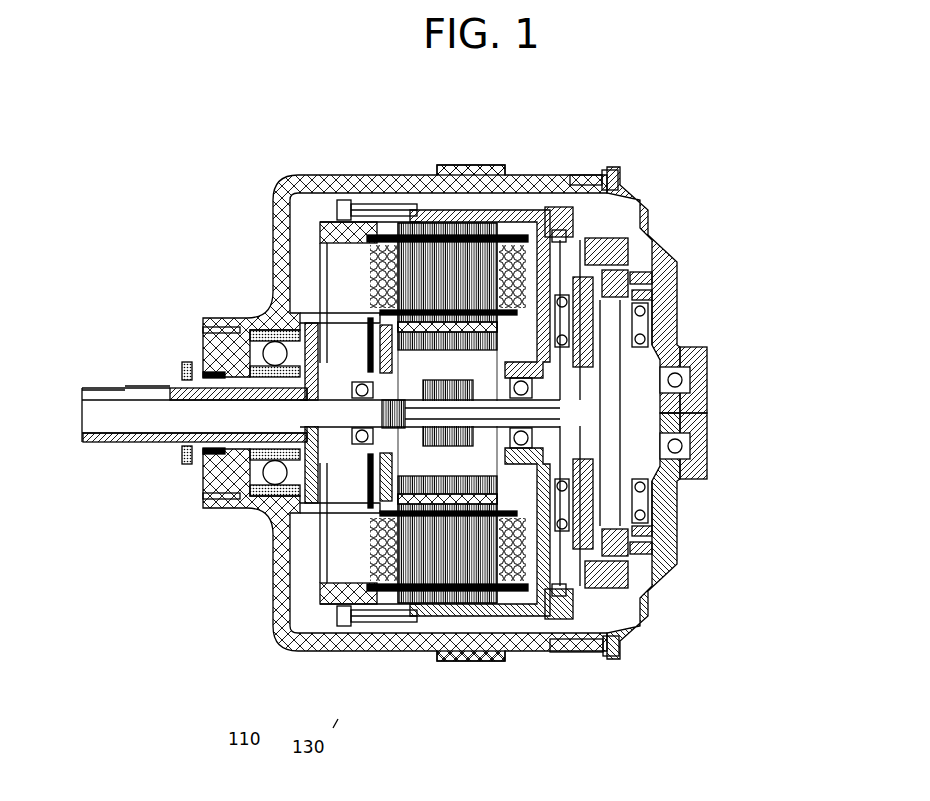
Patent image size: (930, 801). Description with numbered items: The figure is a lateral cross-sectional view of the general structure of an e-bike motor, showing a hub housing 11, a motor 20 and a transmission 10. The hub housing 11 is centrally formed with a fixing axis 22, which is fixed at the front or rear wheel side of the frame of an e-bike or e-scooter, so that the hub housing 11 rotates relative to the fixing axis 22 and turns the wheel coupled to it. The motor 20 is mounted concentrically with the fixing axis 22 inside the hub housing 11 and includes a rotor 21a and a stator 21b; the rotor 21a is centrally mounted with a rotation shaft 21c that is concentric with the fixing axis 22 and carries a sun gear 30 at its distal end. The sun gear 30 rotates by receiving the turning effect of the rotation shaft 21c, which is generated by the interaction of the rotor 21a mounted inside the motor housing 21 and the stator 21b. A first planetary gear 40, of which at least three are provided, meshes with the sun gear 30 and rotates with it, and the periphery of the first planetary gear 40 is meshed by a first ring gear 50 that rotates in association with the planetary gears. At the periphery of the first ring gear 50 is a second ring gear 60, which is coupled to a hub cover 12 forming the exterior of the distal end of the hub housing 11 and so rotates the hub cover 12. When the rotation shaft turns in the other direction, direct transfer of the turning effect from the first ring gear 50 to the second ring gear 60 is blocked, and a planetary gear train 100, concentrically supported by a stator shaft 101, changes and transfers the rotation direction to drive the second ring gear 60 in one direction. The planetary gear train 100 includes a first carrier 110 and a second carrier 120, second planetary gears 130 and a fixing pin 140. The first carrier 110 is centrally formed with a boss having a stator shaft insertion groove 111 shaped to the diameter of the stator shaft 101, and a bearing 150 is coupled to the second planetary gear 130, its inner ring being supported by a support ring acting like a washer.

The transmission 10 is at (648, 182).
The hub housing 11 is at (414, 176).
The hub cover 12 is at (678, 322).
The motor 20 is at (303, 207).
The motor housing 21 is at (385, 200).
The rotor 21a is at (430, 488).
The stator 21b is at (470, 563).
The rotation shaft 21c is at (525, 415).
The fixing axis 22 is at (163, 447).
The sun gear 30 is at (600, 447).
The first planetary gear 40 is at (566, 265).
The first ring gear 50 is at (562, 225).
The second ring gear 60 is at (632, 283).
The planetary gear train 100 is at (676, 343).
The stator shaft 101 is at (677, 407).
The first carrier 110 is at (663, 530).
The stator shaft insertion groove 111 is at (617, 435).
The second carrier 120 is at (653, 538).
The second planetary gear 130 is at (655, 297).
The fixing pin 140 is at (642, 503).
The bearing 150 is at (643, 517).